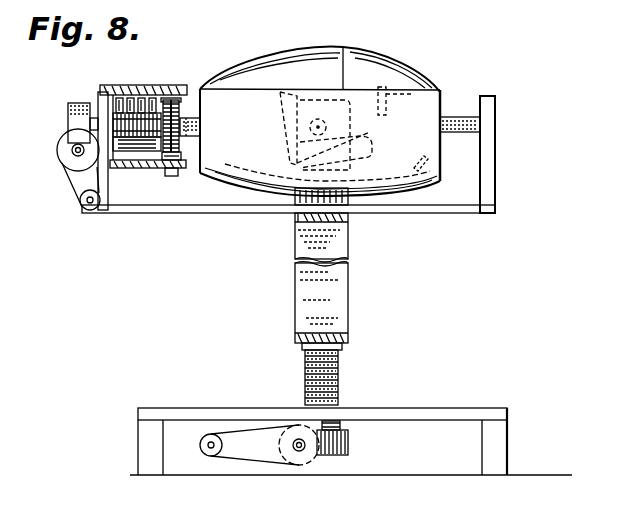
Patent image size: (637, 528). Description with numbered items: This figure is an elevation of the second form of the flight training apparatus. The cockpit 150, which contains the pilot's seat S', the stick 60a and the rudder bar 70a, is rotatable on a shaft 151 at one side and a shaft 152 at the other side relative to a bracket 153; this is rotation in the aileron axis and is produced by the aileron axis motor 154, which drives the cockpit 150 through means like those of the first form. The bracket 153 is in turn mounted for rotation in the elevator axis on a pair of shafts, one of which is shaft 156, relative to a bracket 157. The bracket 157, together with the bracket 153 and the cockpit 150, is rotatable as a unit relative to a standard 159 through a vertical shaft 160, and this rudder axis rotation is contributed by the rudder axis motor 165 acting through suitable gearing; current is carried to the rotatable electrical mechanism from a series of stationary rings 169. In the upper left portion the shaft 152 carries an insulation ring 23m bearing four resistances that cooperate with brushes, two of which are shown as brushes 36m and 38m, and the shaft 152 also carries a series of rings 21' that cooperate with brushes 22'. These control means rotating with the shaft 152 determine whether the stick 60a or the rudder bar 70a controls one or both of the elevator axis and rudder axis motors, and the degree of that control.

The cockpit 150 is at (384, 84).
The stick 60a is at (398, 92).
The shaft 151 is at (461, 116).
The bracket 153 is at (487, 182).
The brush 36m is at (186, 98).
The insulation ring 23m is at (184, 108).
The shaft 152 is at (98, 110).
The brushes 22' is at (136, 84).
The shaft 156 is at (340, 127).
The seat S' is at (344, 131).
The rudder bar 70a is at (423, 177).
The aileron axis motor 154 is at (95, 210).
The rings 21' is at (136, 189).
The brush 38m is at (168, 177).
The bracket 157 is at (349, 287).
The stationary rings 169 is at (340, 366).
The vertical shaft 160 is at (342, 421).
The standard 159 is at (509, 440).
The rudder axis motor 165 is at (202, 452).